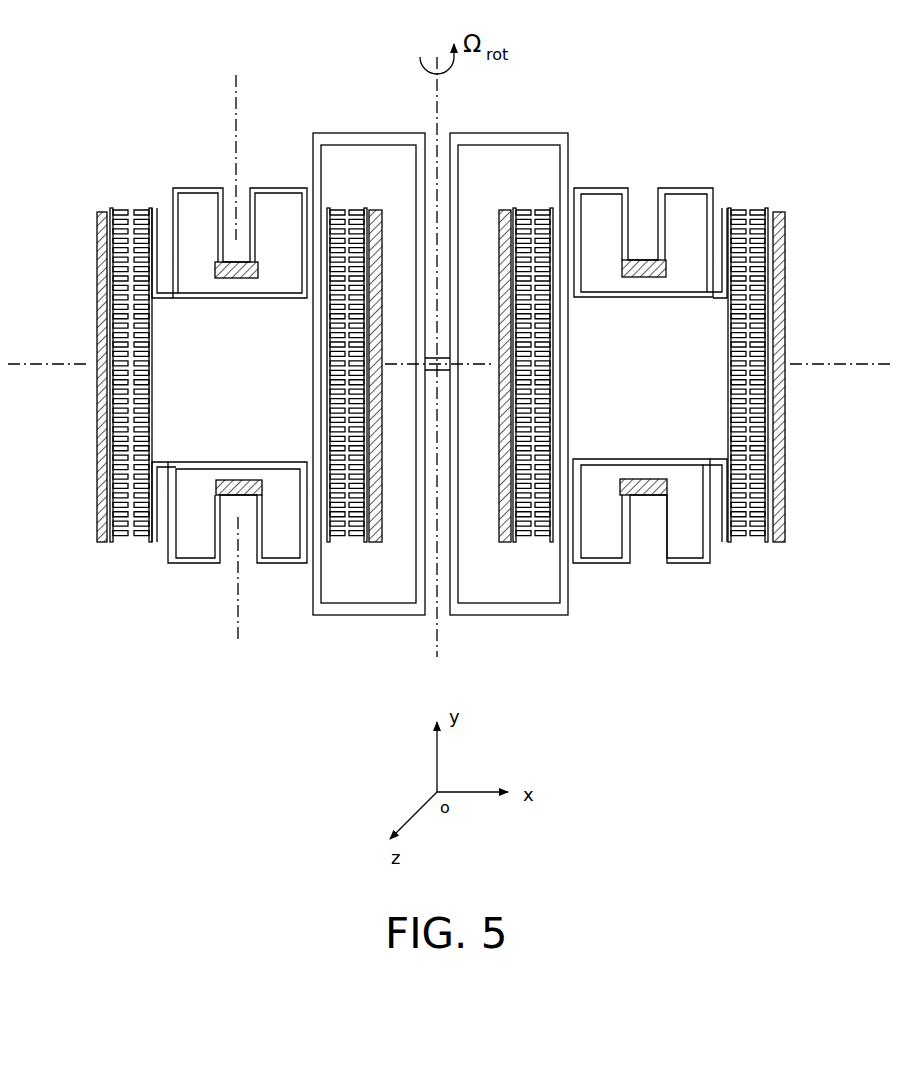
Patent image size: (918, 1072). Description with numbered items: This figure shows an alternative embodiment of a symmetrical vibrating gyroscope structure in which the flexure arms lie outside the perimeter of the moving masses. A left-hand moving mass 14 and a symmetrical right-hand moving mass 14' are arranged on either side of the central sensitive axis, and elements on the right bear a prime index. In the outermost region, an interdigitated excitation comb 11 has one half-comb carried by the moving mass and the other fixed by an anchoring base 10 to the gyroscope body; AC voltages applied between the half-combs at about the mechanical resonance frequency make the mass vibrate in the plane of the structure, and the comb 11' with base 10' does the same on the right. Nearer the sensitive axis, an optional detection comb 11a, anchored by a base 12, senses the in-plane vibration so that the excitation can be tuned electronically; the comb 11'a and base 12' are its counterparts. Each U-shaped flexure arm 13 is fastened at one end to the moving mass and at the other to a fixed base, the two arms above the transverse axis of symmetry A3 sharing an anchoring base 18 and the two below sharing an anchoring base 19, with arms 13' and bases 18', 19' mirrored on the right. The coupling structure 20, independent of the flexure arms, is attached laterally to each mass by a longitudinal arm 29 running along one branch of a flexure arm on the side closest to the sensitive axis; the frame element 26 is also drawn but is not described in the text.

The anchoring base 10 is at (75, 377).
The anchoring base 10' is at (814, 377).
The interdigitated excitation comb 11 is at (127, 401).
The interdigitated excitation comb 11' is at (767, 400).
The interdigitated detection comb 11a is at (355, 208).
The interdigitated detection comb 11'a is at (514, 346).
The anchoring base 12 is at (385, 403).
The anchoring base 12' is at (490, 403).
The flexure arm 13 is at (229, 376).
The flexure arm 13' is at (650, 376).
The moving mass 14 is at (237, 405).
The moving mass 14' is at (606, 472).
The anchoring base 18 is at (252, 247).
The anchoring base 18' is at (660, 245).
The anchoring base 19 is at (255, 509).
The anchoring base 19' is at (660, 508).
The coupling structure 20 is at (421, 636).
The frame 26 is at (372, 133).
The longitudinal arm 29 is at (321, 160).
The transverse axis of symmetry A3 is at (58, 366).